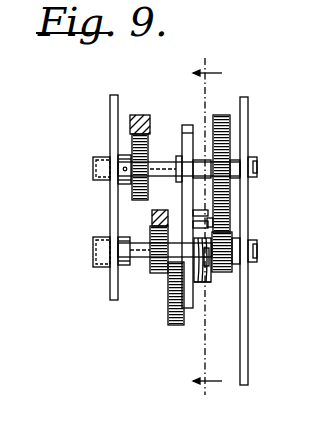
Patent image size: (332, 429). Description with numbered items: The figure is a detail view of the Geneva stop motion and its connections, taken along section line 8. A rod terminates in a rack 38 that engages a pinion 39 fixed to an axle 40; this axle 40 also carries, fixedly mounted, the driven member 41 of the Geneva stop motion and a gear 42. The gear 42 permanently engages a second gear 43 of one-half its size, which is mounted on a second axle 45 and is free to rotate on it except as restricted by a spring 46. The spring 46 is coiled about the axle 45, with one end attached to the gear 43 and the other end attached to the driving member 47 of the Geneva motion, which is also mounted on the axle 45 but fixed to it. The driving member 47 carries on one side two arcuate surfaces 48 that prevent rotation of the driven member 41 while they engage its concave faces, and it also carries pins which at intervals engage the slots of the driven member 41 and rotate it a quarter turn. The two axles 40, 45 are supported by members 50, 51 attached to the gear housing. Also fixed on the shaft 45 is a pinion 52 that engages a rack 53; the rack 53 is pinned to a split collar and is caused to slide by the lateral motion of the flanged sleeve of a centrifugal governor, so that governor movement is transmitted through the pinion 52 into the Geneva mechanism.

The section line 8- 8 is at (207, 230).
The rack 38 is at (143, 116).
The pinion 39 is at (149, 157).
The axle 40 is at (165, 167).
The driven member 41 is at (188, 126).
The gear 42 is at (221, 116).
The second gear 43 is at (230, 272).
The axle 45 is at (131, 262).
The spring 46 is at (207, 264).
The driving member 47 is at (170, 312).
The arcuate surfaces 48 is at (196, 306).
The support member 50 is at (112, 295).
The support member 51 is at (248, 330).
The pinion 52 is at (159, 274).
The rack 53 is at (152, 218).